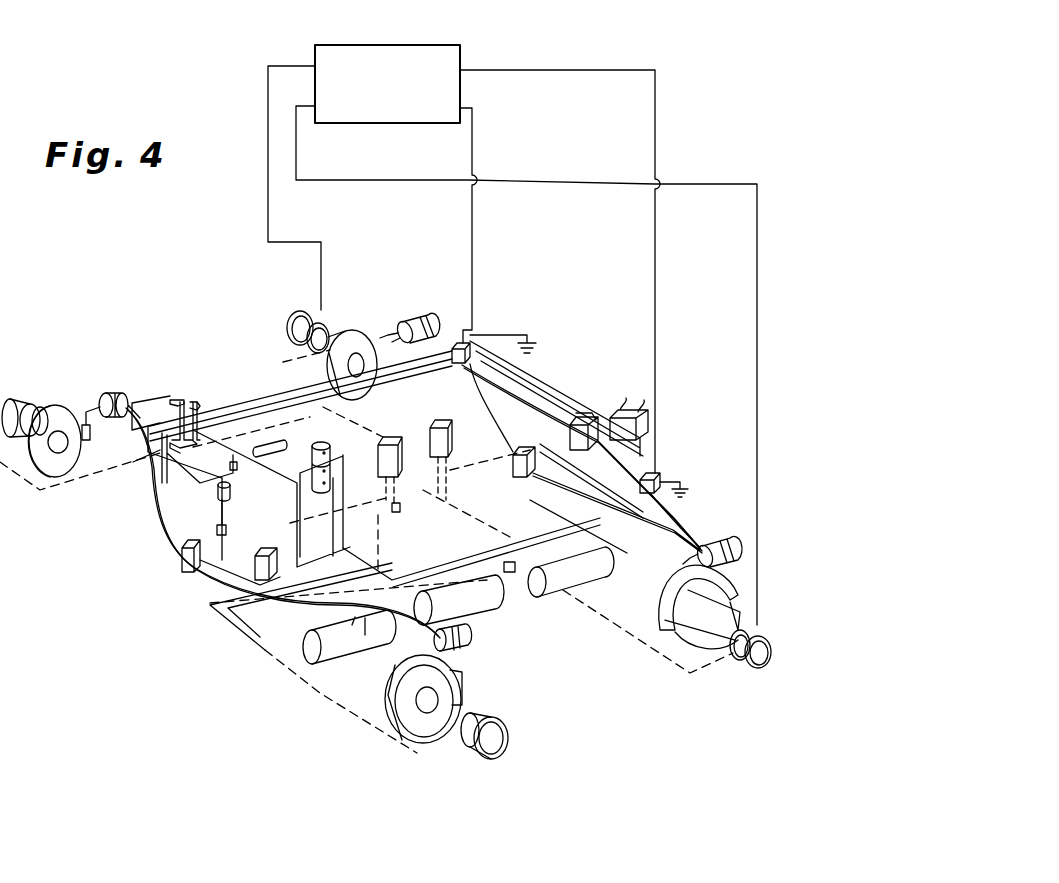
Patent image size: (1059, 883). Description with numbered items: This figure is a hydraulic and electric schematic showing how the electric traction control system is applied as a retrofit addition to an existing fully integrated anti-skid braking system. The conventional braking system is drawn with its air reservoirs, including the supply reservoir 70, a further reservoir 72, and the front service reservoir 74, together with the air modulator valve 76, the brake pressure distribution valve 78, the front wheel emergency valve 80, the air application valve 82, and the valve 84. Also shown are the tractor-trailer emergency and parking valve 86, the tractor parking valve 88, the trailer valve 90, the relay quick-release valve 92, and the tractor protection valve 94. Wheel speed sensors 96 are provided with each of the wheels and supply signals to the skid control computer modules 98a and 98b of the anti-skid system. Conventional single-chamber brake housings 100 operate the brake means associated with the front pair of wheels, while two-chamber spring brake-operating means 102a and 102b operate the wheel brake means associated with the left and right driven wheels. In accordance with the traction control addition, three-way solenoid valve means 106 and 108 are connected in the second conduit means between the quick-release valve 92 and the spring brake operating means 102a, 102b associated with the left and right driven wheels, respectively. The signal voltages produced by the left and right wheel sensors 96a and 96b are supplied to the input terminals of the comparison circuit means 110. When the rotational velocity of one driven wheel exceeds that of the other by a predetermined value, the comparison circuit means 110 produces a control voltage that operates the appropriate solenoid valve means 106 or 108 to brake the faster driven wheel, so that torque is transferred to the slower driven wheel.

The supply reservoir 70 is at (349, 643).
The cylinder 72 is at (459, 600).
The front service reservoir 74 is at (598, 576).
The air modulator valve 76 is at (188, 573).
The brake pressure distribution valve 78 is at (217, 496).
The front wheel emergency valve 80 is at (262, 547).
The air application valve 82 is at (328, 442).
The valve 84 is at (270, 437).
The tractor-trailer emergency and parking valve 86 is at (197, 405).
The tractor parking valve 88 is at (192, 400).
The trailer valve 90 is at (176, 400).
The relay quick-release valve 92 is at (586, 416).
The tractor protection valve 94 is at (624, 406).
The wheel speed sensors 96 is at (40, 404).
The left wheel sensor 96a is at (736, 658).
The right wheel sensor 96b is at (323, 322).
The skid control computer module 98a is at (392, 437).
The skid control computer module 98b is at (442, 420).
The single-chamber brake housings 100 is at (114, 395).
The two-chamber spring brake-operating means 102a is at (722, 538).
The two-chamber spring brake-operating means 102b is at (405, 318).
The 3-way solenoid valve means 106 is at (656, 478).
The 3-way solenoid valve means 108 is at (460, 340).
The comparison circuit means 110 is at (388, 45).